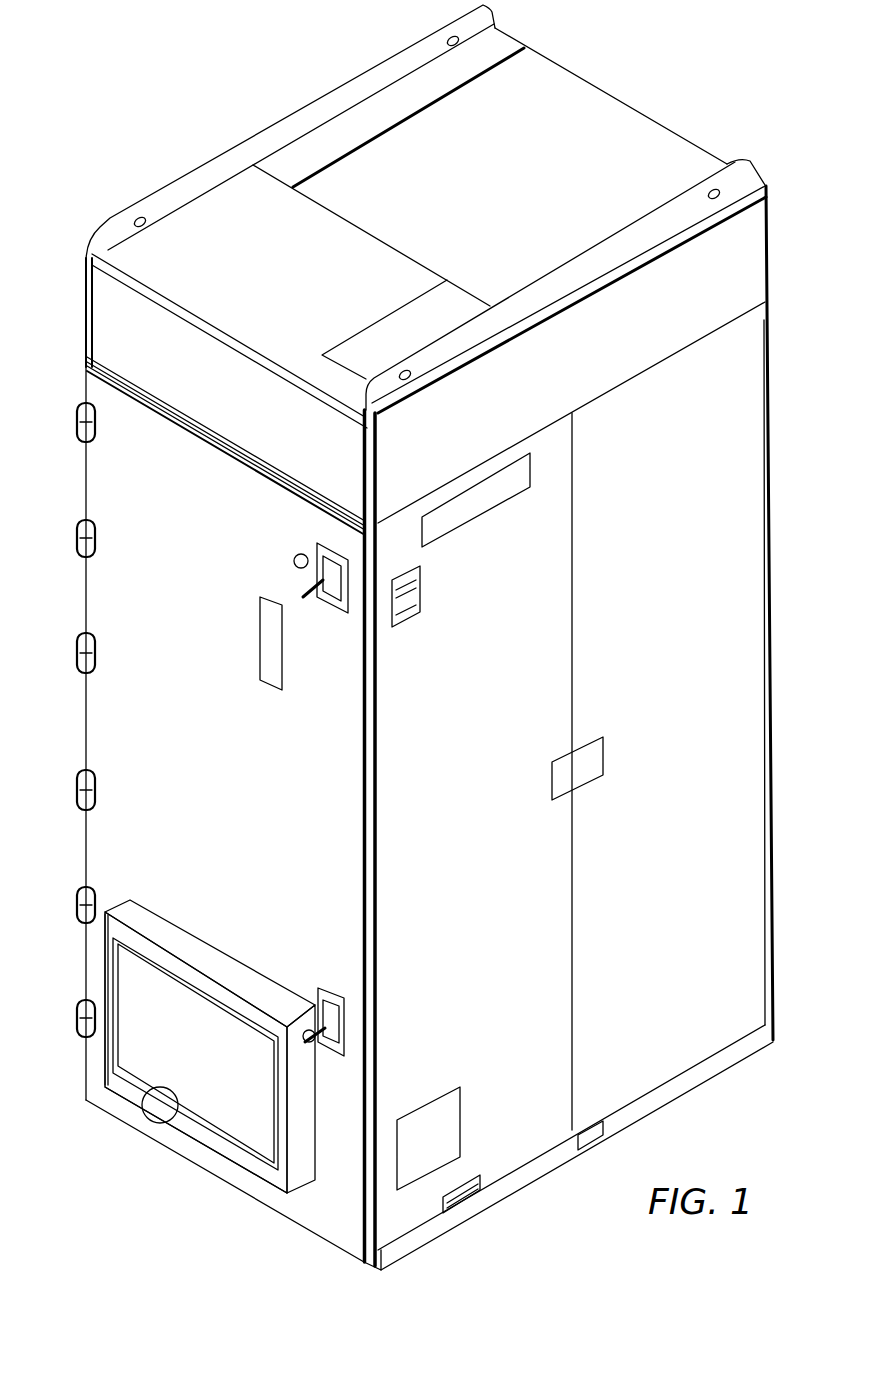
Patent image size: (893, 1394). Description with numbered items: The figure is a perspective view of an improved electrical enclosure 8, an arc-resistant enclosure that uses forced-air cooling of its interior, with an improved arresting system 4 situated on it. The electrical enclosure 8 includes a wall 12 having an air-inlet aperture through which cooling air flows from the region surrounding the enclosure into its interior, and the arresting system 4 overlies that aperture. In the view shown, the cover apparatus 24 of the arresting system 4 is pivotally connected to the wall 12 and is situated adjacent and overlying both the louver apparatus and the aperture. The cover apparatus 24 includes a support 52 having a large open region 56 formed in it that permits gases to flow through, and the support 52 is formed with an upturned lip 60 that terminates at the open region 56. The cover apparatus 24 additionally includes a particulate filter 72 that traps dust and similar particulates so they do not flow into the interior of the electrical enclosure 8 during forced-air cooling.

The electrical enclosure 8 is at (406, 637).
The wall 12 is at (108, 842).
The arresting system 4 is at (180, 1021).
The cover apparatus 24 is at (250, 977).
The support 52 is at (134, 910).
The particulate filter 72 is at (124, 1052).
The open region 56 is at (151, 1124).
The upturned lip 60 is at (222, 1143).